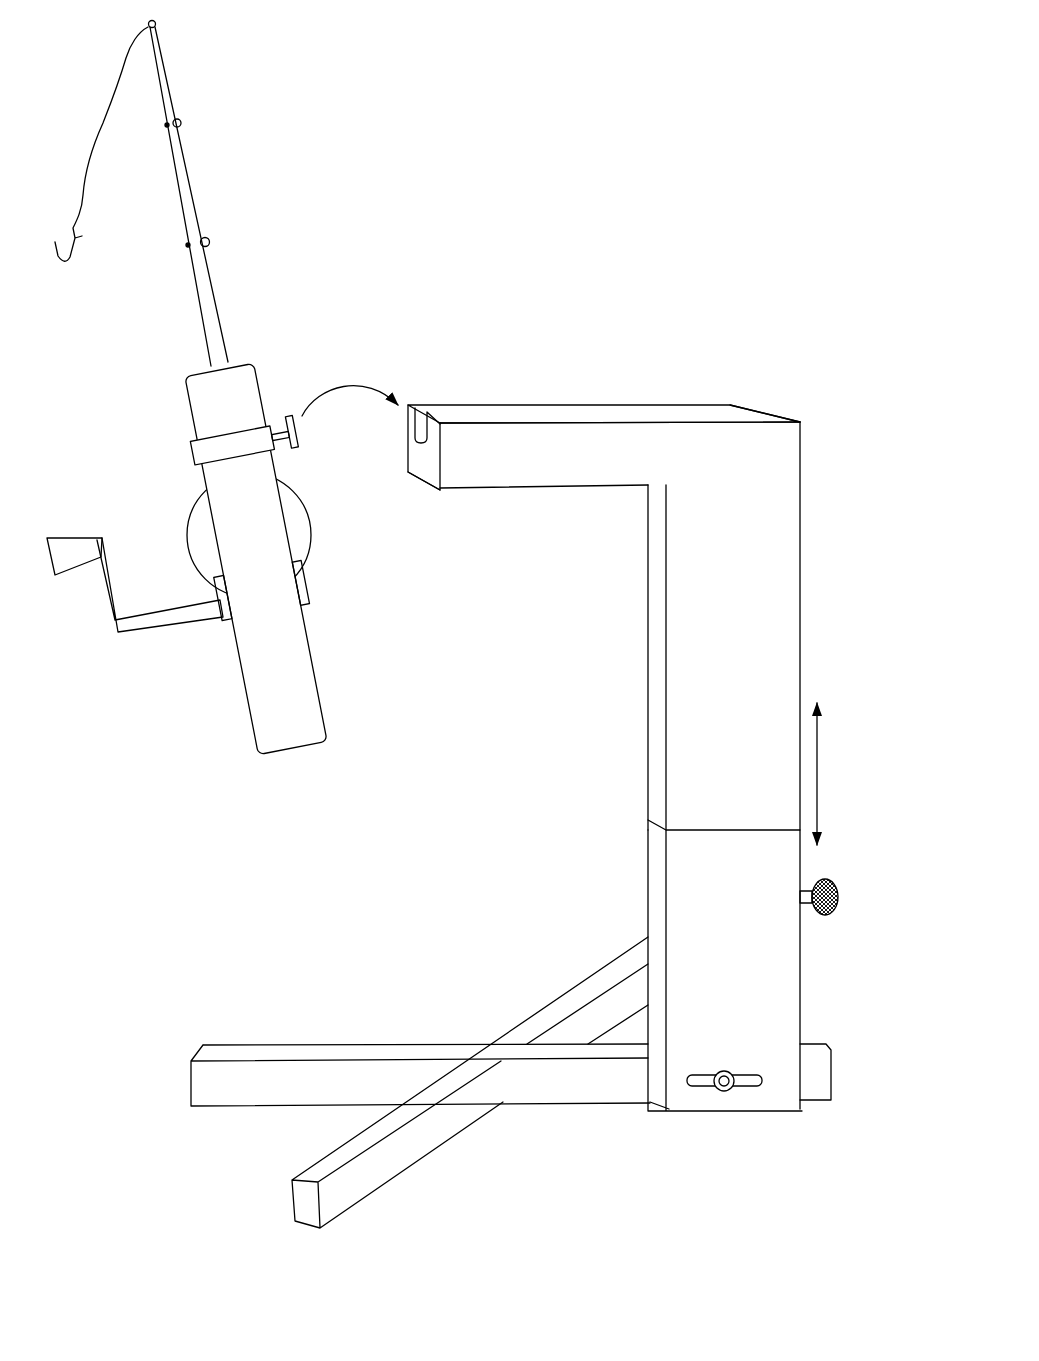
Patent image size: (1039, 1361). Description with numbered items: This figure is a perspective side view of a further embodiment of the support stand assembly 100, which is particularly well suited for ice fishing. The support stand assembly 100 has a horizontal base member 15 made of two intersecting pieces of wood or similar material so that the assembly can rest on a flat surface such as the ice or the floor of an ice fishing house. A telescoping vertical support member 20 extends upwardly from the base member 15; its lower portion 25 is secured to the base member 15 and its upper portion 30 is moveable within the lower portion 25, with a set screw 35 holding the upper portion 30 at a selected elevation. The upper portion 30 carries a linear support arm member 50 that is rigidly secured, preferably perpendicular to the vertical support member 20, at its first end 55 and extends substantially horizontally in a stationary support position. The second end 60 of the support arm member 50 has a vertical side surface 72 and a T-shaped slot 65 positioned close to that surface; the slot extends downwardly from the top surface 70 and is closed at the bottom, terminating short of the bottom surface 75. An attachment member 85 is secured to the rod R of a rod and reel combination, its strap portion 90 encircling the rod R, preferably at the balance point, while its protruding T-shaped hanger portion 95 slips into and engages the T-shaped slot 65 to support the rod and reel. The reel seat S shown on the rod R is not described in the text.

The support stand assembly 100 is at (684, 203).
The horizontal base member 15 is at (416, 1054).
The vertical support member 20 is at (607, 741).
The lower portion 25 is at (697, 935).
The upper portion 30 is at (697, 617).
The set screw 35 is at (839, 897).
The linear support arm member 50 is at (608, 407).
The first end 55 is at (717, 447).
The second end 60 is at (452, 458).
The T-shaped slot 65 is at (433, 405).
The top surface 70 is at (517, 417).
The vertical side surface 72 is at (423, 467).
The bottom surface 75 is at (512, 488).
The attachment member 85 is at (225, 422).
The strap portion 90 is at (192, 452).
The T-shaped hanger portion 95 is at (288, 413).
The rod R is at (273, 682).
The reel seat bracket S is at (188, 567).